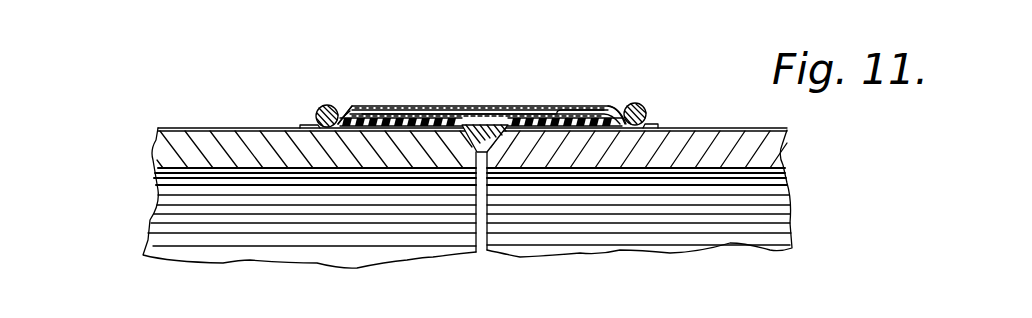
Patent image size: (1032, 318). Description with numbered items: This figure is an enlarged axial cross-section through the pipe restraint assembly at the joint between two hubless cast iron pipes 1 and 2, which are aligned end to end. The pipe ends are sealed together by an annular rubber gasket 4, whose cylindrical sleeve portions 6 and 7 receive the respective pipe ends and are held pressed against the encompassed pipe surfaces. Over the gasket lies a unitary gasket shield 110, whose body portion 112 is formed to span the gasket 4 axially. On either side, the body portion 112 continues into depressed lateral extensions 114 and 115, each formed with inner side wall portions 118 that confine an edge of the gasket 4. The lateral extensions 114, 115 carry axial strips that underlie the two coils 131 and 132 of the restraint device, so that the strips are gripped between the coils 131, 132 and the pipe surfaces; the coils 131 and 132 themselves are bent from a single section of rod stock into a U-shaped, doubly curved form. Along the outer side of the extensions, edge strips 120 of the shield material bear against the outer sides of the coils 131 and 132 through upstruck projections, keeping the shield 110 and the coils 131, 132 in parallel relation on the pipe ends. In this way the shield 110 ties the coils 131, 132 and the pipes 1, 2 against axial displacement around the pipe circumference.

The cast iron pipe 1 is at (158, 153).
The cast iron pipe 2 is at (772, 142).
The annular rubber gasket 4 is at (558, 116).
The cylindrical sleeve portion 6 is at (440, 128).
The cylindrical sleeve portion 7 is at (538, 119).
The unitary gasket shield 110 is at (583, 107).
The body portion 112 is at (493, 111).
The depressed lateral extension 114 is at (349, 95).
The depressed lateral extension 115 is at (614, 100).
The inner side wall portion 118 is at (372, 113).
The edge strip 120 is at (308, 119).
The coil 131 is at (322, 105).
The coil 132 is at (647, 111).